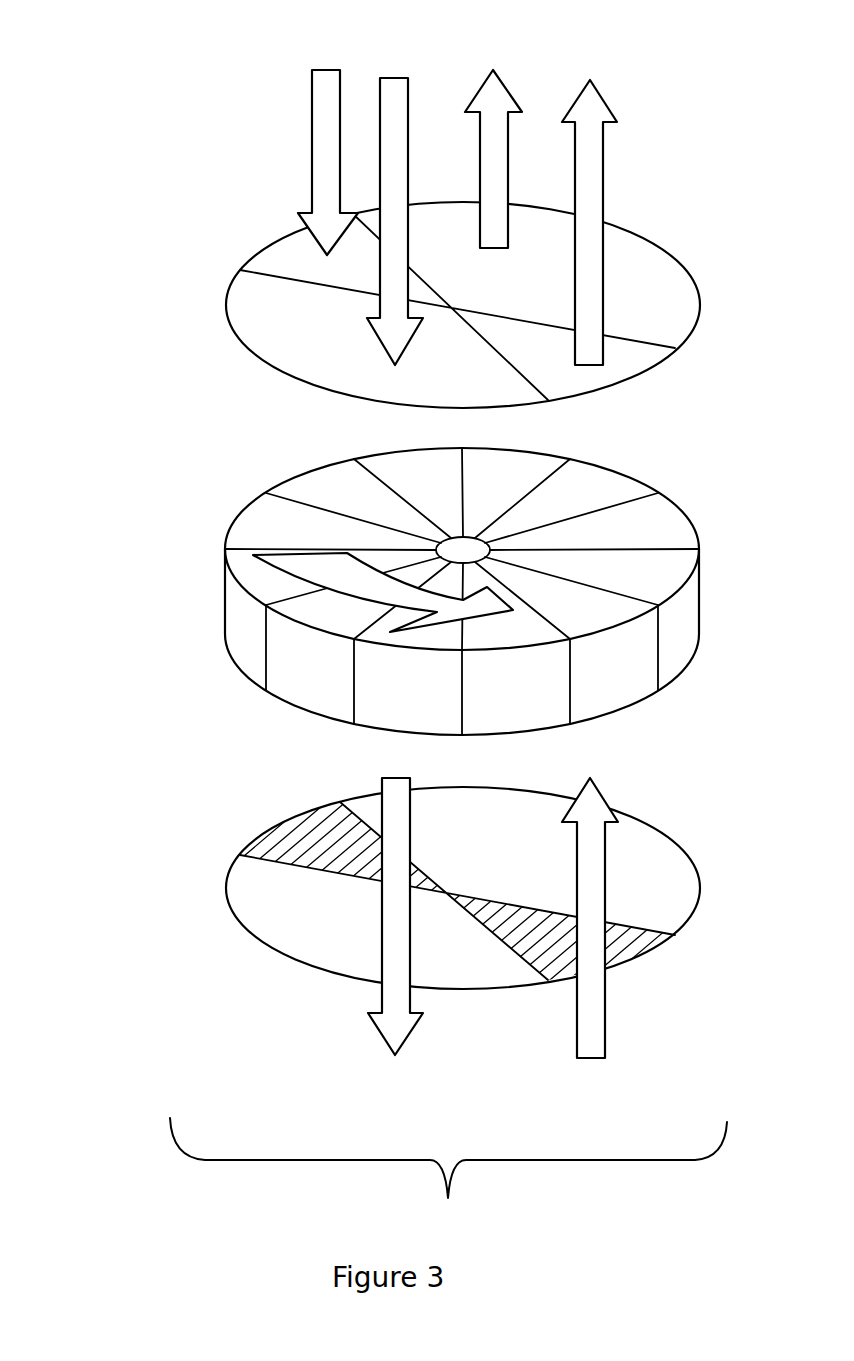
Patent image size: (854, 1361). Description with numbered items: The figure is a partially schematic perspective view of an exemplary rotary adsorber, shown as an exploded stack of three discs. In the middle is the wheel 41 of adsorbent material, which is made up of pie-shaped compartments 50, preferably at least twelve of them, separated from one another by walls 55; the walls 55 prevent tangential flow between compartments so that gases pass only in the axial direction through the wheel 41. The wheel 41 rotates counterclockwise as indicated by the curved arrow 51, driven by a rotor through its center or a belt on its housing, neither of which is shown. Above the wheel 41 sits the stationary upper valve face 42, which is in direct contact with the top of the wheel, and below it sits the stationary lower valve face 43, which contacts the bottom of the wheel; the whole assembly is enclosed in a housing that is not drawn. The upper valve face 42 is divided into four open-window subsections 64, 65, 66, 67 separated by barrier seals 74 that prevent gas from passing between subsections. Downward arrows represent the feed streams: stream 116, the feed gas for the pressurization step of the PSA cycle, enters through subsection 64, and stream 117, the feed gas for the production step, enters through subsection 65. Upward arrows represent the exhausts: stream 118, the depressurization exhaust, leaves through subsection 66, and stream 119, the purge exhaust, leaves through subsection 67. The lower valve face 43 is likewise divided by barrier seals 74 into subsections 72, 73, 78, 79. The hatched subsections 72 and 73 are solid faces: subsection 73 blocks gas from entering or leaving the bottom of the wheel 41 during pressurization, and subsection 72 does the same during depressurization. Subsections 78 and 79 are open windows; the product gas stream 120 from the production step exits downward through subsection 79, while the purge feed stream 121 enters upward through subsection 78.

The wheel 41 is at (443, 605).
The upper valve face 42 is at (208, 310).
The lower valve face 43 is at (213, 908).
The compartments 50 is at (303, 677).
The arrow 51 is at (318, 565).
The walls 55 is at (582, 686).
The subsection 64 is at (297, 255).
The subsection 65 is at (295, 332).
The subsection 66 is at (540, 345).
The subsection 67 is at (637, 268).
The subsection 72 is at (622, 917).
The subsection 73 is at (300, 837).
The barrier seals 74 is at (533, 382).
The subsection 78 is at (491, 838).
The subsection 79 is at (318, 916).
The stream 116 is at (323, 80).
The stream 117 is at (397, 87).
The stream 118 is at (603, 92).
The stream 119 is at (487, 78).
The stream 120 is at (382, 1043).
The stream 121 is at (585, 1050).